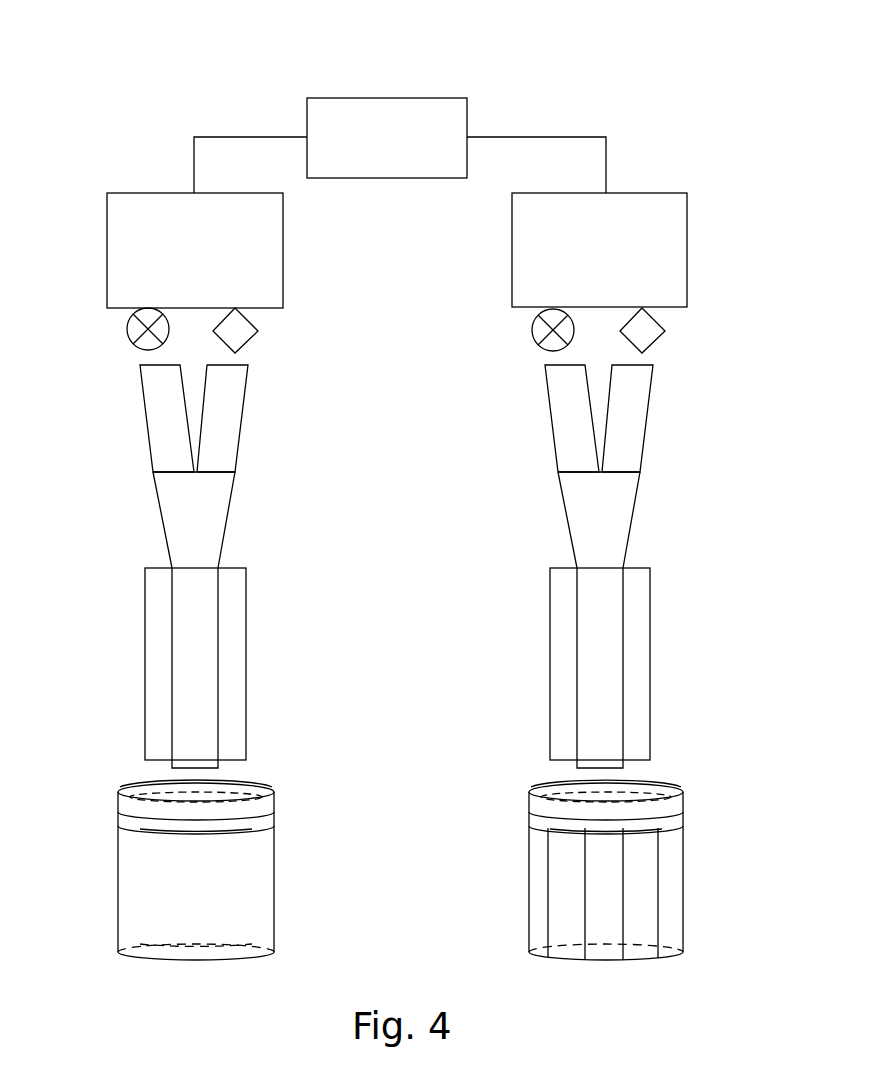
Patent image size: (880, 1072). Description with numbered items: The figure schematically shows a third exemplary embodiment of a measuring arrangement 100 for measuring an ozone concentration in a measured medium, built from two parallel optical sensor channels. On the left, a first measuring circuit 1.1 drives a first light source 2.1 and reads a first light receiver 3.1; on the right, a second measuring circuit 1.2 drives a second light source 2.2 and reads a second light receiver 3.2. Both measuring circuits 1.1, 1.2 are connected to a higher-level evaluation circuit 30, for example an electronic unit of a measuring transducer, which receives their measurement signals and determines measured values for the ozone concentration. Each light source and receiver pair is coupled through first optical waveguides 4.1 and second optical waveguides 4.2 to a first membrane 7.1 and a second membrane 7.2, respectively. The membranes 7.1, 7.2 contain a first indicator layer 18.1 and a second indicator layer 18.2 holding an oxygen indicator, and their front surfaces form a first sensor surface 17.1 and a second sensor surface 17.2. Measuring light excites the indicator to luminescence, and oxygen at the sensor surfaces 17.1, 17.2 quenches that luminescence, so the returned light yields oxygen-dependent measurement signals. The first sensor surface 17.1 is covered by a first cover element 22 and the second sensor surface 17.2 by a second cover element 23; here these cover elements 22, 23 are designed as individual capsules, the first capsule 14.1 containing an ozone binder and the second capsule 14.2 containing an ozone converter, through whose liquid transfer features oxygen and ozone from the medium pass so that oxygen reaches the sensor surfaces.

The measuring arrangement 100 is at (680, 113).
The evaluation circuit 30 is at (400, 145).
The first measuring circuit 1.1 is at (195, 250).
The second measuring circuit 1.2 is at (599, 250).
The first light source 2.1 is at (137, 328).
The second light source 2.2 is at (542, 329).
The first light receiver 3.1 is at (243, 332).
The second light receiver 3.2 is at (650, 332).
The first optical waveguides 4.1 is at (155, 402).
The second optical waveguides 4.2 is at (561, 402).
The first membrane 7.1 is at (274, 815).
The second membrane 7.2 is at (683, 815).
The first capsule 14.1 is at (274, 930).
The second capsule 14.2 is at (683, 920).
The first sensor surface 17.1 is at (152, 829).
The second sensor surface 17.2 is at (560, 830).
The first indicator layer 18.1 is at (128, 793).
The second indicator layer 18.2 is at (535, 794).
The first cover element 22 is at (118, 936).
The second cover element 23 is at (672, 865).